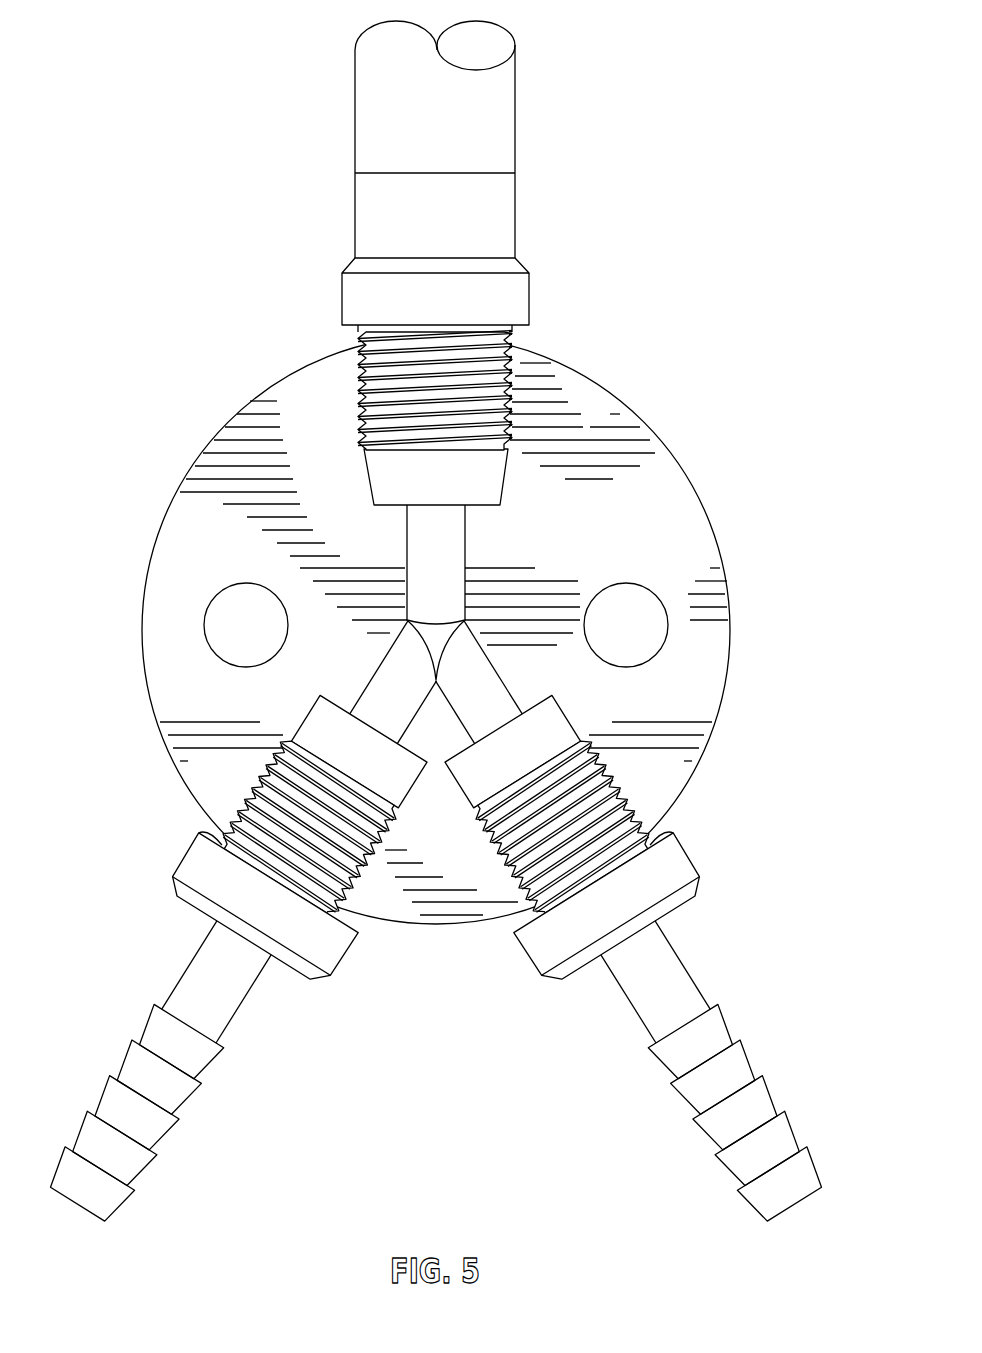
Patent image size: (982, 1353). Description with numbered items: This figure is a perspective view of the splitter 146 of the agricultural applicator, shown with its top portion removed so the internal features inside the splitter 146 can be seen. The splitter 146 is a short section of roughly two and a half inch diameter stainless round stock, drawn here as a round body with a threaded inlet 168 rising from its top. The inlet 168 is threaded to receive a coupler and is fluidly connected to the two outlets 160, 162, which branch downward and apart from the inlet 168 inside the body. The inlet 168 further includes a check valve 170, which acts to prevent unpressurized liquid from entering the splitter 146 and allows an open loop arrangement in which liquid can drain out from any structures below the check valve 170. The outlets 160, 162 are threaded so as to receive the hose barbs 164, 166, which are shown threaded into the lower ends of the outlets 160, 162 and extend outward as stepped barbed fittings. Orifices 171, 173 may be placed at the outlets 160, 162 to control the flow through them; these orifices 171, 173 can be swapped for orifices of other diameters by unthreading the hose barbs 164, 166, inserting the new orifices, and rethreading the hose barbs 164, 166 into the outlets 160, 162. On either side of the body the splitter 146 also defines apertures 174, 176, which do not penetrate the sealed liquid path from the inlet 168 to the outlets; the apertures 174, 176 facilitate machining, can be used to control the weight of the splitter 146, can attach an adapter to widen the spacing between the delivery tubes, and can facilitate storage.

The splitter 146 is at (704, 392).
The outlet 160 is at (192, 848).
The outlet 162 is at (680, 848).
The hose barb 164 is at (137, 1165).
The hose barb 166 is at (735, 1165).
The inlet 168 is at (360, 388).
The check valve 170 is at (455, 490).
The orifice 171 is at (318, 725).
The orifice 173 is at (554, 725).
The aperture 174 is at (218, 590).
The aperture 176 is at (654, 590).